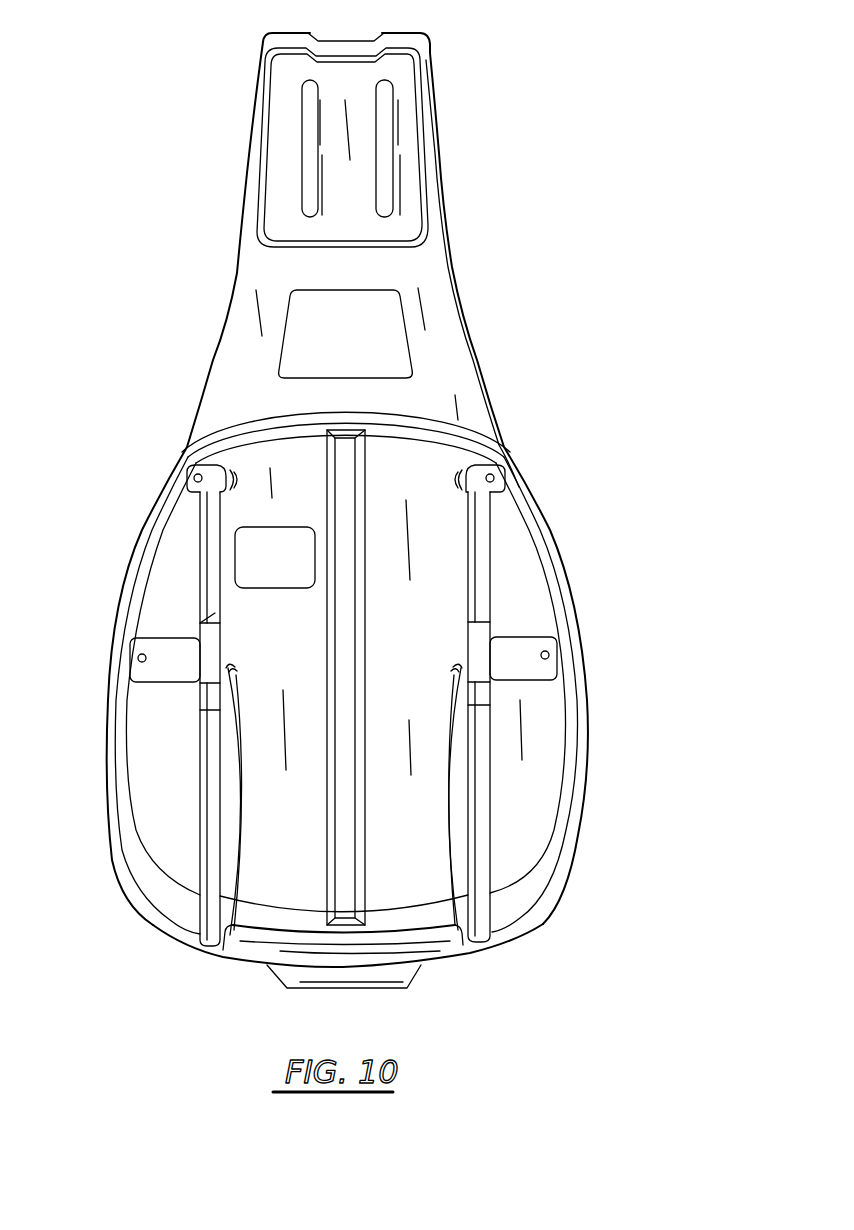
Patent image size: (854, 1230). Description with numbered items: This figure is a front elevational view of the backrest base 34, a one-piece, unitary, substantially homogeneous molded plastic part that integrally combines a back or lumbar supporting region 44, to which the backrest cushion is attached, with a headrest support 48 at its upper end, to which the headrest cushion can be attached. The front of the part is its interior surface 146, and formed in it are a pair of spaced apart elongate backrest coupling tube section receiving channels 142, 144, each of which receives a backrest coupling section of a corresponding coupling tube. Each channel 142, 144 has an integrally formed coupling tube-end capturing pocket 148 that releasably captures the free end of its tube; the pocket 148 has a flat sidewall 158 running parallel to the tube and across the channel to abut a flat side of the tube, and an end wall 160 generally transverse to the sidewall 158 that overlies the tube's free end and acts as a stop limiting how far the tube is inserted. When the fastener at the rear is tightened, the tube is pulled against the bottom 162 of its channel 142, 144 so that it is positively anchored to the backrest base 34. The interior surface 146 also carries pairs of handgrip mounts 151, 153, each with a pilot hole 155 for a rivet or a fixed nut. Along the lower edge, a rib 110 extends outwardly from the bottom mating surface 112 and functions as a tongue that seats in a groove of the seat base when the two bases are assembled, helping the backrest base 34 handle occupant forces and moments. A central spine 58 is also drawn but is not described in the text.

The backrest base 34 is at (495, 247).
The headrest support 48 is at (440, 98).
The back or lumbar supporting region 44 is at (552, 520).
The central spine 58 is at (352, 462).
The interior surface 146 is at (268, 465).
The handgrip mount 151 is at (202, 473).
The pilot hole 155 is at (194, 477).
The end wall 160 is at (205, 622).
The sidewall 158 is at (205, 638).
The handgrip mount 153 is at (143, 672).
The coupling tube-end capturing pocket 148 is at (212, 708).
The bottom of the channel 162 is at (208, 845).
The backrest coupling tube section receiving channel 142 is at (200, 957).
The backrest coupling tube section receiving channel 144 is at (478, 958).
The bottom mating surface 112 is at (438, 947).
The rib 110 is at (283, 988).